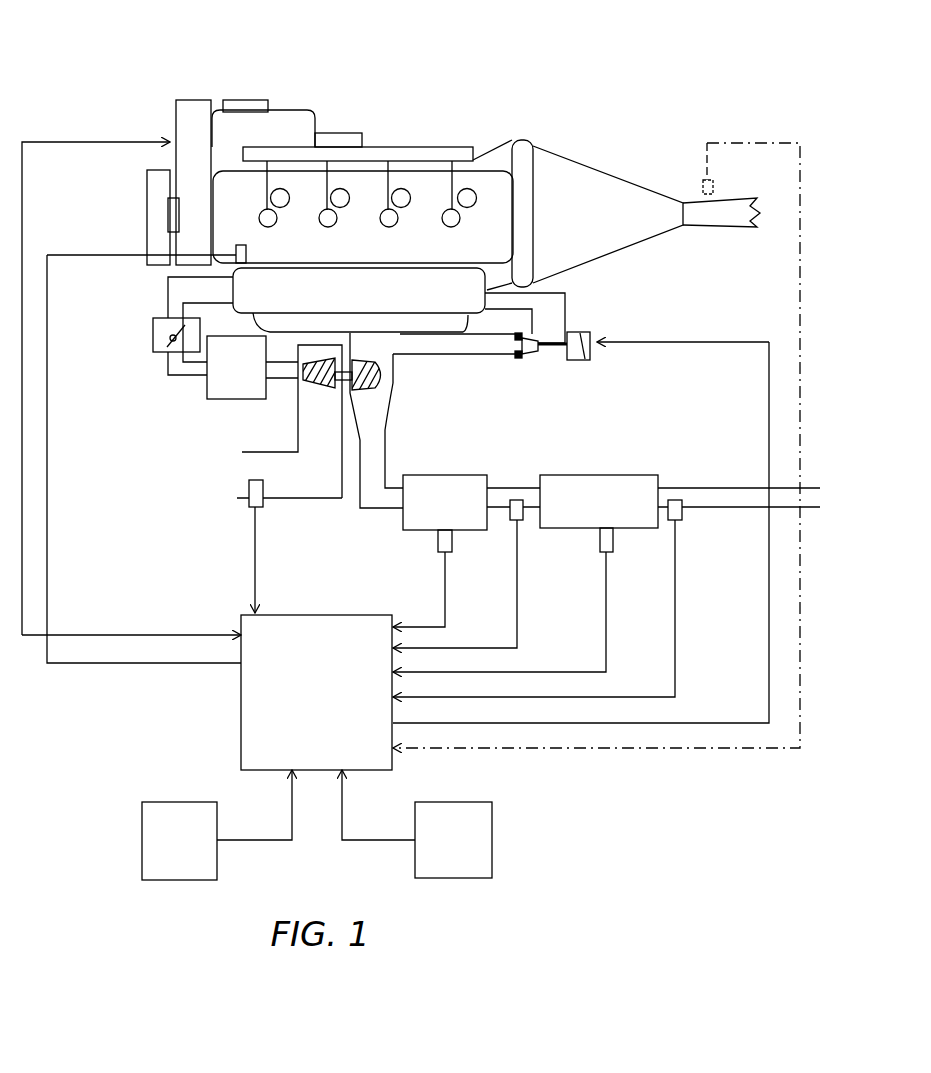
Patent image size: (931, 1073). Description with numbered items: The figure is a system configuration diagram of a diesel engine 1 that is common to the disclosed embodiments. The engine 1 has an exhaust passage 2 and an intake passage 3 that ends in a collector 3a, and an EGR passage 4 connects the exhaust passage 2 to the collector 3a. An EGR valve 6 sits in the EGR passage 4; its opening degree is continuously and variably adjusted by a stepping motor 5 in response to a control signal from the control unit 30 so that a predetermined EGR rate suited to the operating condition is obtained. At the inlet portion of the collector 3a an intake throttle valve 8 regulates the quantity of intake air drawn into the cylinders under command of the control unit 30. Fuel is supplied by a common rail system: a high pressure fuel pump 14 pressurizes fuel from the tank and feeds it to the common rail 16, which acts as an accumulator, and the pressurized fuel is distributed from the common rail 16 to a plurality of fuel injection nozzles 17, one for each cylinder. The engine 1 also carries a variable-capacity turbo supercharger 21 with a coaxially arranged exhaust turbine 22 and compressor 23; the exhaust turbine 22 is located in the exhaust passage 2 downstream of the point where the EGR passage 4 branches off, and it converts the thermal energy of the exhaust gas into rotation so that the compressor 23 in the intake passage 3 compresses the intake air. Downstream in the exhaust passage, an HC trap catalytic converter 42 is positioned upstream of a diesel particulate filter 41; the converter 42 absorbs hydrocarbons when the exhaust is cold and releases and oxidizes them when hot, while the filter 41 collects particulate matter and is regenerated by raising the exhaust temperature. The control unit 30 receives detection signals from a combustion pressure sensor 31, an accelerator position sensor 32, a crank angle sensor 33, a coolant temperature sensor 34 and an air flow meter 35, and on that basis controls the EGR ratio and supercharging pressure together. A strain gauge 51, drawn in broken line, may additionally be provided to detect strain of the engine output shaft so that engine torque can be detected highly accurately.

The diesel engine 1 is at (500, 123).
The exhaust passage 2 is at (385, 462).
The intake passage 3 is at (297, 383).
The collector 3a is at (483, 287).
The EGR passage 4 is at (567, 310).
The stepping motor 5 is at (610, 347).
The EGR valve 6 is at (537, 352).
The intake throttle valve 8 is at (150, 346).
The high pressure fuel pump 14 is at (290, 110).
The common rail 16 is at (375, 147).
The fuel injection nozzles 17 is at (440, 207).
The variable-capacity turbo supercharger 21 is at (207, 392).
The exhaust turbine 22 is at (390, 400).
The compressor 23 is at (298, 428).
The control unit 30 is at (313, 613).
The combustion pressure sensor 31 is at (455, 150).
The accelerator position sensor 32 is at (492, 828).
The crank angle sensor 33 is at (142, 838).
The temperature sensor 34 is at (238, 248).
The air flow meter 35 is at (250, 510).
The diesel particulate filter 41 is at (585, 472).
The HC trap catalytic converter 42 is at (470, 473).
The strain gauge 51 is at (703, 185).